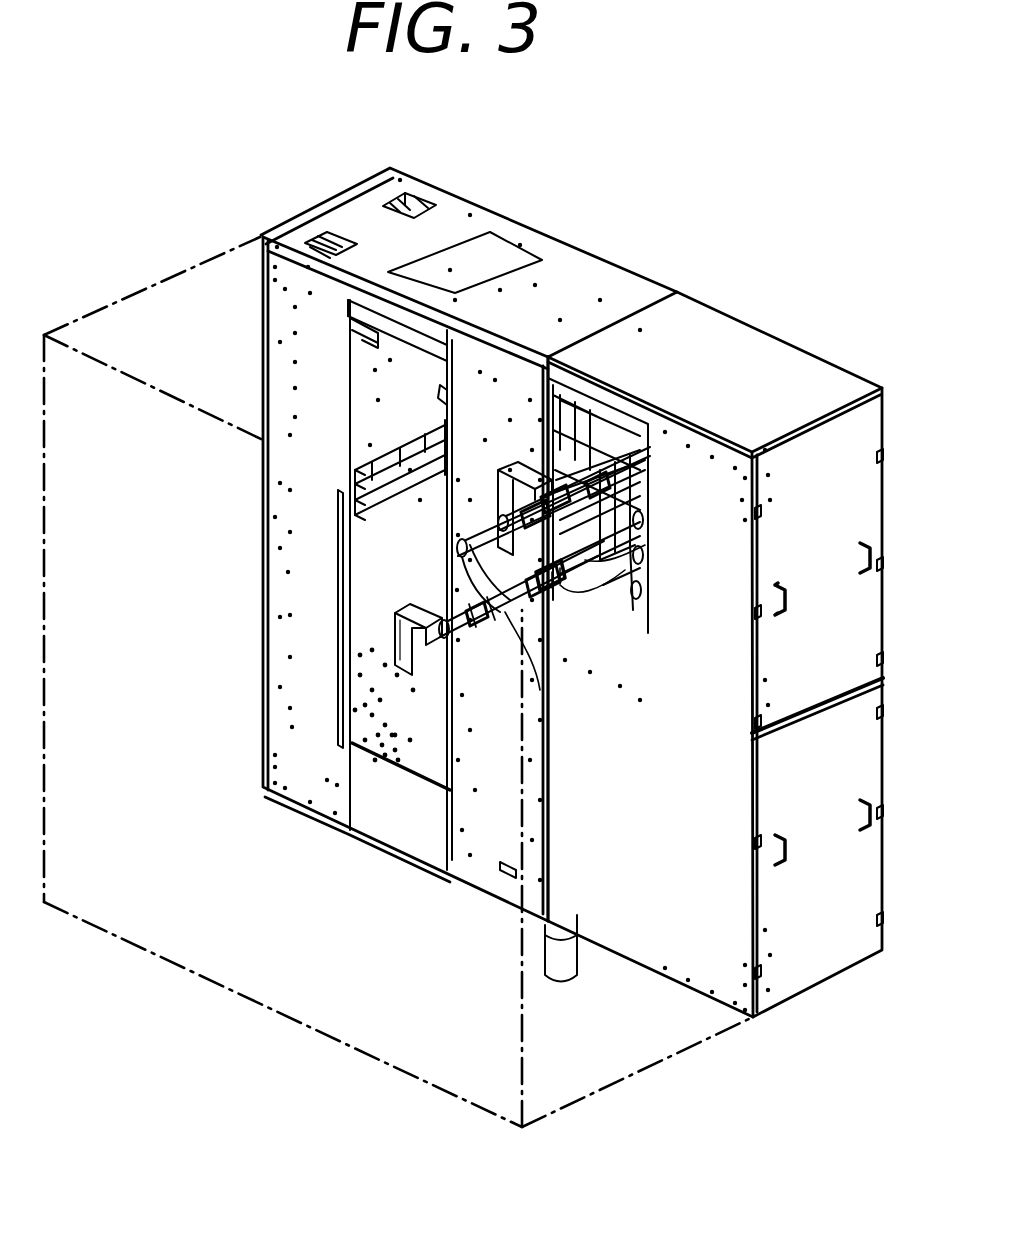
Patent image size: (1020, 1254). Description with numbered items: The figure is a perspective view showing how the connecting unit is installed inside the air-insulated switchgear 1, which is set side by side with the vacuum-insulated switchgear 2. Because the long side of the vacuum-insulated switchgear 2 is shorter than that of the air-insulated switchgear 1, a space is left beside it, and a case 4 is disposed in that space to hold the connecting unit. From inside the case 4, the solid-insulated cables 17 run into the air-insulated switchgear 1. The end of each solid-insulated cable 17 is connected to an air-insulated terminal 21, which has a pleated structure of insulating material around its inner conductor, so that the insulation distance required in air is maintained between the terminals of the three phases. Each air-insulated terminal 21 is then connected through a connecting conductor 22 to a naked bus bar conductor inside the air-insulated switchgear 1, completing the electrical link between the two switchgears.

The air-insulated switchgear 1 is at (240, 965).
The vacuum-insulated switchgear 2 is at (595, 283).
The case 4 is at (745, 360).
The solid-insulated cable 17 is at (553, 578).
The air-insulated terminal 21 is at (503, 583).
The connecting conductor 22 is at (405, 612).